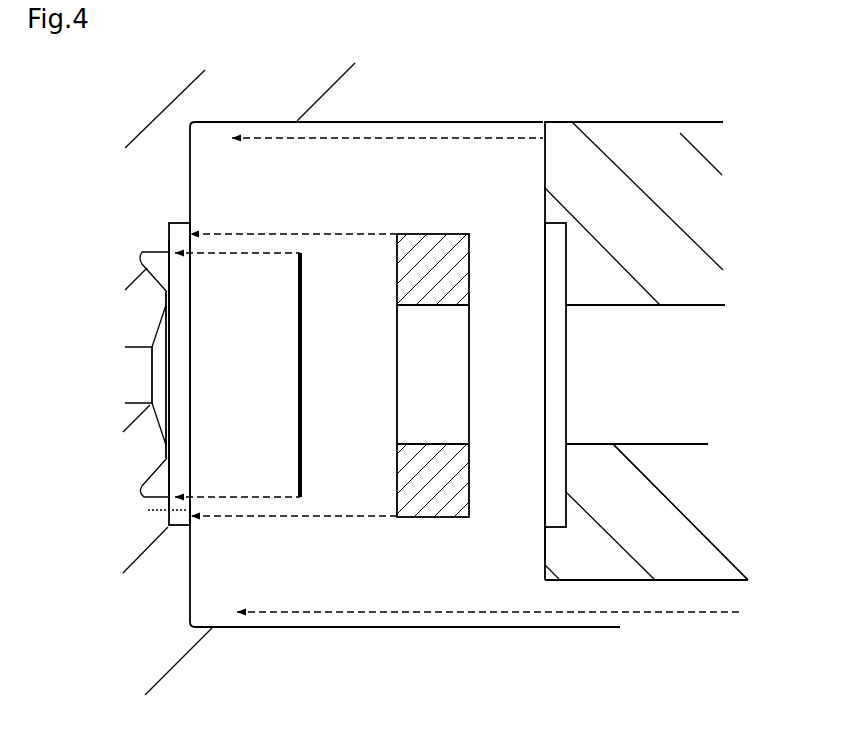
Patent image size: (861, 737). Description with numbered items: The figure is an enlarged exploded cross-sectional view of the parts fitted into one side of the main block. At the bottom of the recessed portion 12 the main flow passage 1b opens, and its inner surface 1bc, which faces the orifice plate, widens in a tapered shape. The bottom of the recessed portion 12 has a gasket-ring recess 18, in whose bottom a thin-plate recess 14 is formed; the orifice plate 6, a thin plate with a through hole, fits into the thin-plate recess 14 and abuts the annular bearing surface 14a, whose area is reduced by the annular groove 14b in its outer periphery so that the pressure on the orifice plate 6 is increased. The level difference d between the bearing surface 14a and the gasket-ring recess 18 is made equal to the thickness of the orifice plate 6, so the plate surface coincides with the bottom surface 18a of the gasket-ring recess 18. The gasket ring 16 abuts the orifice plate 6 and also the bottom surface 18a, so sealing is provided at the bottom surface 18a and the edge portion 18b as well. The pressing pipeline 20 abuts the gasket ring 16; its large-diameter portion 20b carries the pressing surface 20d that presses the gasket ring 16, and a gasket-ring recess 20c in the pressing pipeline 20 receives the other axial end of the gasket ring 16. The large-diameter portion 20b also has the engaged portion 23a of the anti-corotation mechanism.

The recessed portion 12 is at (410, 126).
The pressing pipeline 20 is at (636, 108).
The pressing surface 20d is at (545, 270).
The gasket-ring recess 20c is at (536, 510).
The large-diameter portion 20b is at (668, 565).
The engaged portion 23a is at (600, 582).
The gasket ring 16 is at (432, 233).
The orifice plate 6 is at (302, 283).
The thin-plate recess 14 is at (181, 453).
The bearing surface 14a is at (172, 297).
The annular groove 14b is at (150, 247).
The main flow passage 1b is at (133, 398).
The inner surface 1bc is at (150, 338).
The level difference d is at (168, 527).
The gasket-ring recess 18 is at (193, 523).
The bottom surface 18a is at (176, 249).
The edge portion 18b is at (166, 248).